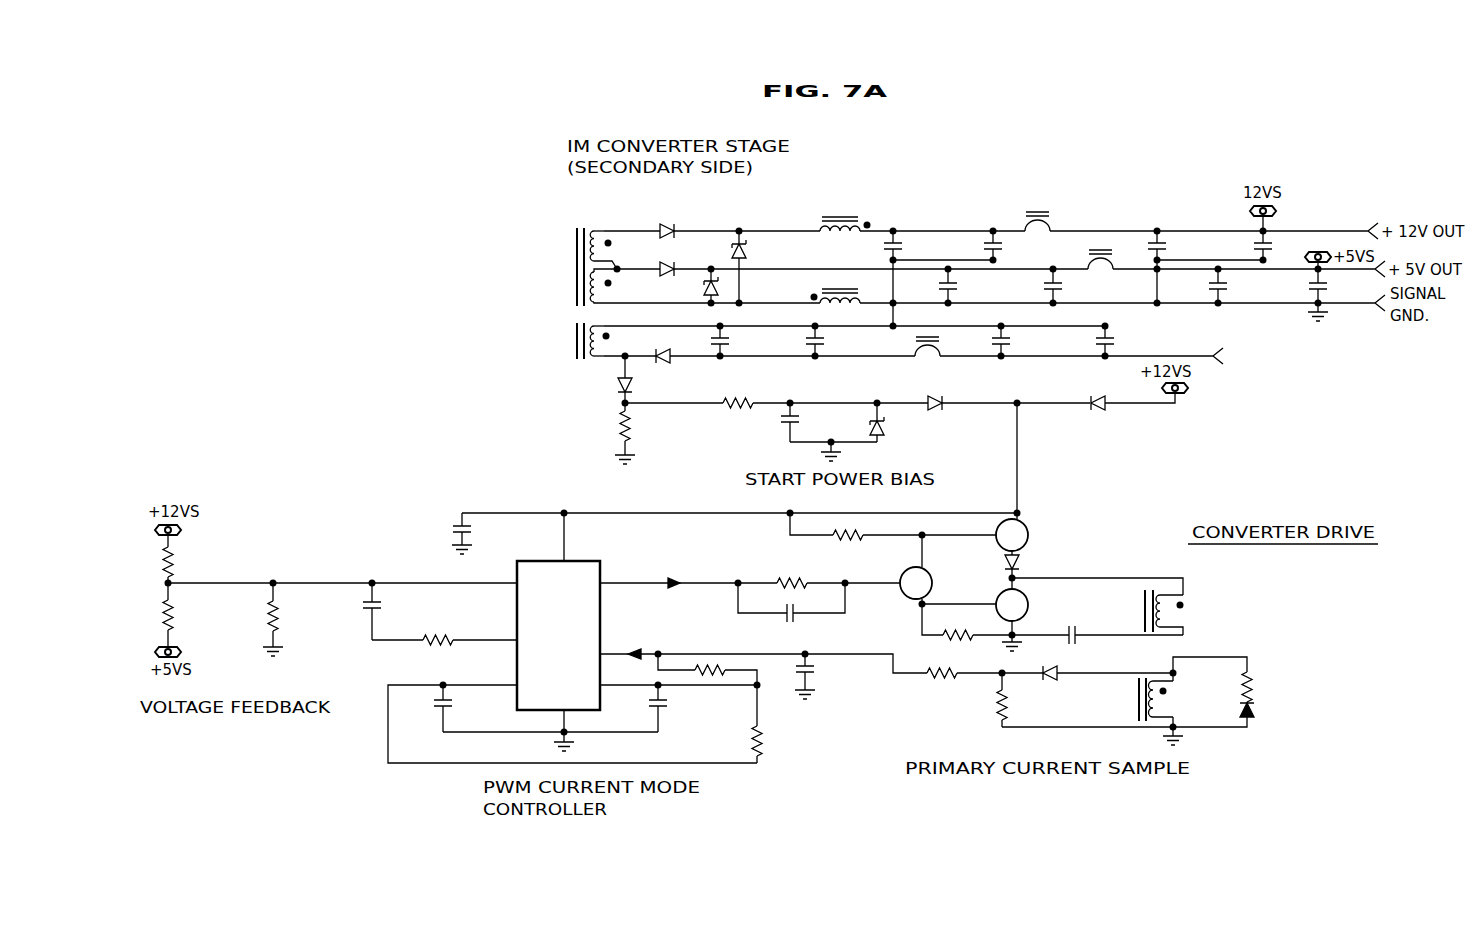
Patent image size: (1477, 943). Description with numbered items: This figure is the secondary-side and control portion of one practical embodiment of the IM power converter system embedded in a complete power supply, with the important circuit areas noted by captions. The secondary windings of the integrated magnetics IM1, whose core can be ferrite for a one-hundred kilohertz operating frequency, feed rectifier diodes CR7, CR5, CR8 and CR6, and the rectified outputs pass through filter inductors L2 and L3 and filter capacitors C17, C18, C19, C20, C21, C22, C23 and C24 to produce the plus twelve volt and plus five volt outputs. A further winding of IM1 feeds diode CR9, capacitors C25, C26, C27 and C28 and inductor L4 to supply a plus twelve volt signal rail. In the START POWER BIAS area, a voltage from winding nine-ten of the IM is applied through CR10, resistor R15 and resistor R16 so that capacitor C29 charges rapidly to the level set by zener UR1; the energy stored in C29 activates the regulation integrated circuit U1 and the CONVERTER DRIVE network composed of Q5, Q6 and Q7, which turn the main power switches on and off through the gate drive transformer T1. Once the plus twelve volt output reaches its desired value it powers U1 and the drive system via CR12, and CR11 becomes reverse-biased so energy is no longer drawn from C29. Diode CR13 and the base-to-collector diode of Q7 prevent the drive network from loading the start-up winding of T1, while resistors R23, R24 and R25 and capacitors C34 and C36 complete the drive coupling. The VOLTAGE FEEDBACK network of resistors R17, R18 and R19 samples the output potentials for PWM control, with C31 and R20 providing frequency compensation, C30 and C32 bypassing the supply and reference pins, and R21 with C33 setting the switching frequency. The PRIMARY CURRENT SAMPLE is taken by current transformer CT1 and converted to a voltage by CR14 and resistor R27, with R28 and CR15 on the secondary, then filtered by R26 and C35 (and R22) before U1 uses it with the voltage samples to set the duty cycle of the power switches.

The integrated magnetics IM1 is at (703, 274).
The rectifier diode CR5 is at (683, 263).
The zener diode CR6 is at (690, 287).
The rectifier diode CR7 is at (683, 225).
The zener diode CR8 is at (756, 267).
The rectifier diode CR9 is at (667, 347).
The diode CR10 is at (598, 387).
The diode CR11 is at (937, 393).
The diode CR12 is at (1103, 413).
The diode CR13 is at (1037, 560).
The diode CR14 is at (1065, 663).
The diode CR15 is at (1270, 712).
The filter capacitor C17 is at (909, 245).
The electrolytic filter capacitor C18 is at (997, 245).
The filter capacitor C19 is at (1173, 245).
The electrolytic filter capacitor C20 is at (1270, 245).
The filter capacitor C21 is at (964, 286).
The electrolytic filter capacitor C22 is at (1061, 286).
The filter capacitor C23 is at (1235, 286).
The electrolytic filter capacitor C24 is at (1327, 286).
The filter capacitor C25 is at (737, 341).
The electrolytic filter capacitor C26 is at (822, 341).
The filter capacitor C27 is at (1017, 341).
The electrolytic filter capacitor C28 is at (1111, 341).
The capacitor C29 is at (807, 422).
The VCC bypass capacitor C30 is at (480, 533).
The capacitor C31 is at (389, 611).
The reference bypass capacitor C32 is at (461, 708).
The capacitor C33 is at (674, 708).
The speed-up capacitor C34 is at (807, 620).
The capacitor C35 is at (822, 676).
The drive coupling capacitor C36 is at (1075, 625).
The output filter inductor L2 is at (1037, 211).
The output filter inductor L3 is at (1100, 251).
The bias filter inductor L4 is at (937, 344).
The resistor R15 is at (641, 433).
The resistor R16 is at (740, 392).
The resistor R17 is at (190, 559).
The resistor R18 is at (190, 615).
The resistor R19 is at (291, 619).
The resistor R20 is at (440, 628).
The resistor R21 is at (777, 724).
The current sense filter resistor R22 is at (713, 654).
The base drive resistor R23 is at (792, 571).
The pull-up resistor R24 is at (859, 547).
The resistor R25 is at (958, 624).
The resistor R26 is at (931, 686).
The resistor R27 is at (981, 701).
The resistor R28 is at (1267, 686).
The transistor Q5 is at (931, 576).
The transistor Q6 is at (1029, 531).
The transistor Q7 is at (1029, 601).
The regulation integrated circuit U1 is at (569, 627).
The zener regulator diode UR1 is at (912, 422).
The gate drive transformer T1 is at (1197, 608).
The current transformer CT1 is at (1104, 699).